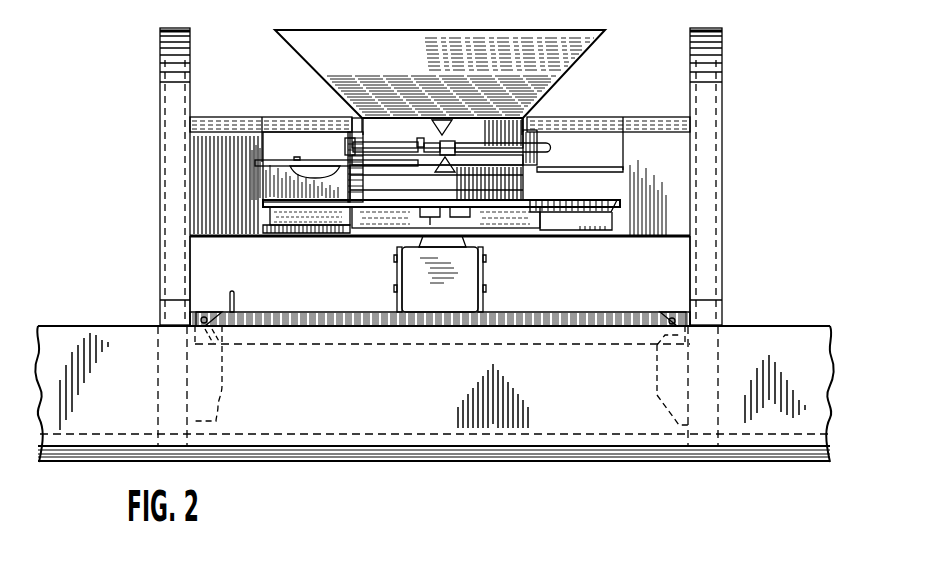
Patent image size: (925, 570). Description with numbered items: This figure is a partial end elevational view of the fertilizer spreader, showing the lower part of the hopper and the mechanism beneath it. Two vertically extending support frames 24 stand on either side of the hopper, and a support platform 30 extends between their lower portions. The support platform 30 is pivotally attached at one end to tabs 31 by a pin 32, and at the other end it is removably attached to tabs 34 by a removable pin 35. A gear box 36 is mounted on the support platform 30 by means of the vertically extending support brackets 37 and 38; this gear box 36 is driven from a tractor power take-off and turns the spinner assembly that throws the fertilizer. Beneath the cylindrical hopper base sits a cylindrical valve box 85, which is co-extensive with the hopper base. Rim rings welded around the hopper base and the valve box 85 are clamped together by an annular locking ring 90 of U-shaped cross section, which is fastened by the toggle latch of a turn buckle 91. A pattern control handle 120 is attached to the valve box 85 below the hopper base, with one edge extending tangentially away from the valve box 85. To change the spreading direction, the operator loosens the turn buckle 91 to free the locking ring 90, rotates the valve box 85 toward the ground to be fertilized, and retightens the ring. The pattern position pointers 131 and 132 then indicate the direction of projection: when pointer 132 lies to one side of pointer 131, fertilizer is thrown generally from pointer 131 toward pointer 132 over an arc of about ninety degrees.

The support frames 24 is at (164, 106).
The support platform 30 is at (600, 325).
The tabs 31 is at (664, 378).
The pin 32 is at (678, 320).
The tabs 34 is at (196, 417).
The removable pin 35 is at (216, 296).
The gear box 36 is at (443, 307).
The support bracket 37 is at (397, 278).
The support bracket 38 is at (483, 283).
The cylindrical valve box 85 is at (527, 154).
The annular locking ring 90 is at (373, 146).
The turn buckle 91 is at (452, 150).
The pattern control handle 120 is at (330, 142).
The pattern position pointer 131 is at (432, 121).
The pattern position pointer 132 is at (440, 167).